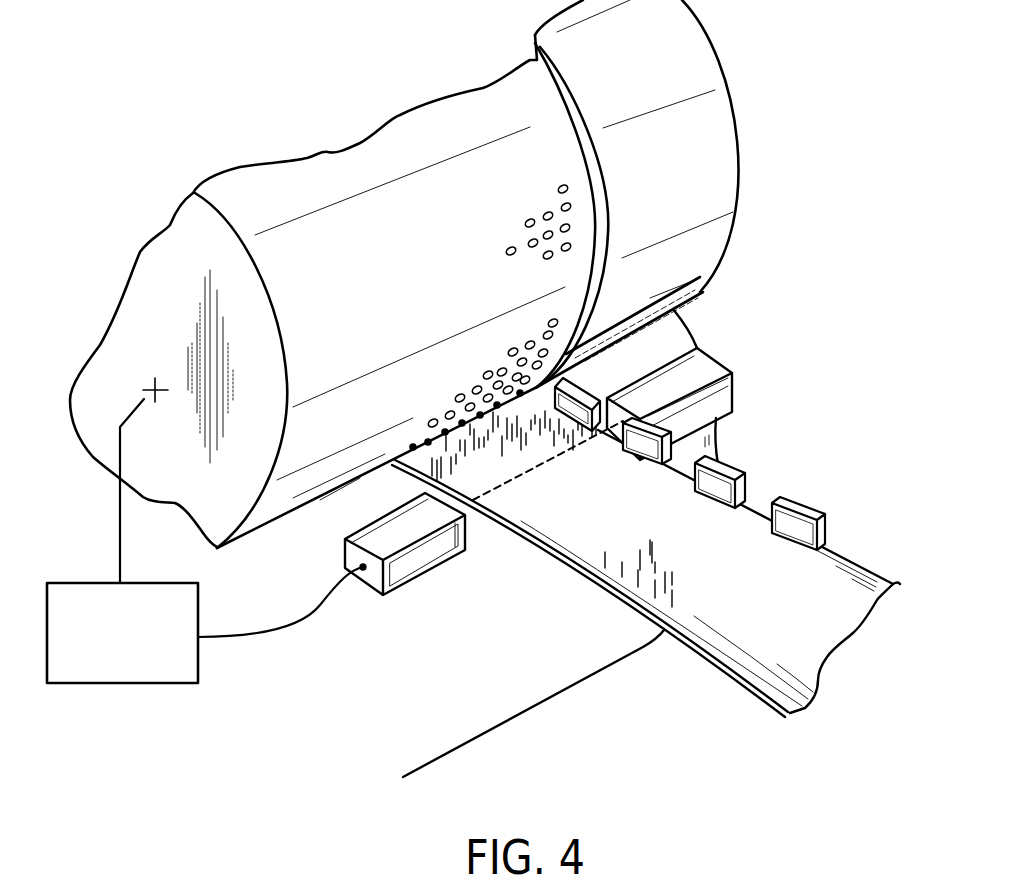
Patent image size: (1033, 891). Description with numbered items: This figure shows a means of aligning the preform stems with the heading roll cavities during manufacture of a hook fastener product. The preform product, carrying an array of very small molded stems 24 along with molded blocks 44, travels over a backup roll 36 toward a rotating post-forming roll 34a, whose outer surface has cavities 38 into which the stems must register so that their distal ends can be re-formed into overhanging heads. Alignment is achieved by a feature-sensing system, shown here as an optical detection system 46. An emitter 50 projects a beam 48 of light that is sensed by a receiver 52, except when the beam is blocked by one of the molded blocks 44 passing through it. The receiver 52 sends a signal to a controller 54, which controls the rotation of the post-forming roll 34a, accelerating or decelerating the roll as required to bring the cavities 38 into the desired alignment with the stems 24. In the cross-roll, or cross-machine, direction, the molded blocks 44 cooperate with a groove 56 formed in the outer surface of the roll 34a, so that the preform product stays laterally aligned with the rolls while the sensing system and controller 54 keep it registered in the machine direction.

The stems 24 is at (674, 553).
The post-forming roll 34a is at (736, 137).
The backup roll 36 is at (572, 688).
The cavities 38 is at (507, 247).
The molded blocks 44 is at (733, 473).
The optical detection system 46 is at (380, 578).
The beam 48 is at (498, 487).
The emitter 50 is at (723, 362).
The receiver 52 is at (343, 553).
The controller 54 is at (137, 647).
The groove 56 is at (608, 229).